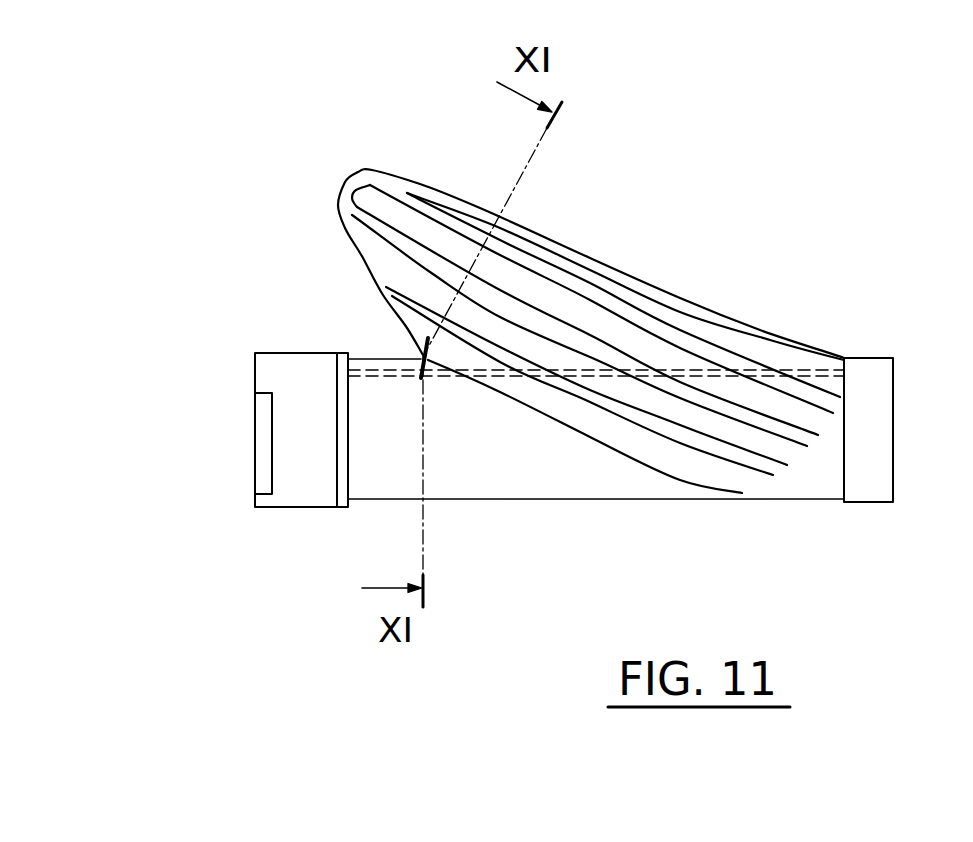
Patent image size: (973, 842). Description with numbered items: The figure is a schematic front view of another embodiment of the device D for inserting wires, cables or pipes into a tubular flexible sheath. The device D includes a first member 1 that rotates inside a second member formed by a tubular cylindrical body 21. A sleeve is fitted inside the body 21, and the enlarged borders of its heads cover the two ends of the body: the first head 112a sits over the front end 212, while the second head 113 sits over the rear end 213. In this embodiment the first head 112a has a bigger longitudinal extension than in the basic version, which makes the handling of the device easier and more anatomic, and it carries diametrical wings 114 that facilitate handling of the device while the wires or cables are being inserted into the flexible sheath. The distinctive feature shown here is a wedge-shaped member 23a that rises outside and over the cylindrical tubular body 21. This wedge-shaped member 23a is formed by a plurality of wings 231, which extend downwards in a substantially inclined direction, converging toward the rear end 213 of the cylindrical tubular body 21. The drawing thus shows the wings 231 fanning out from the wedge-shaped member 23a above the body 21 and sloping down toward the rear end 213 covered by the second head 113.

The first member 1 is at (406, 382).
The tubular cylindrical body 21 is at (566, 483).
The wedge-shaped member 23a is at (721, 292).
The wings 231 is at (560, 301).
The first head 112a is at (298, 500).
The second head 113 is at (878, 382).
The diametrical wings 114 is at (262, 478).
The front end 212 is at (341, 353).
The rear end 213 is at (841, 356).
The device D is at (733, 176).